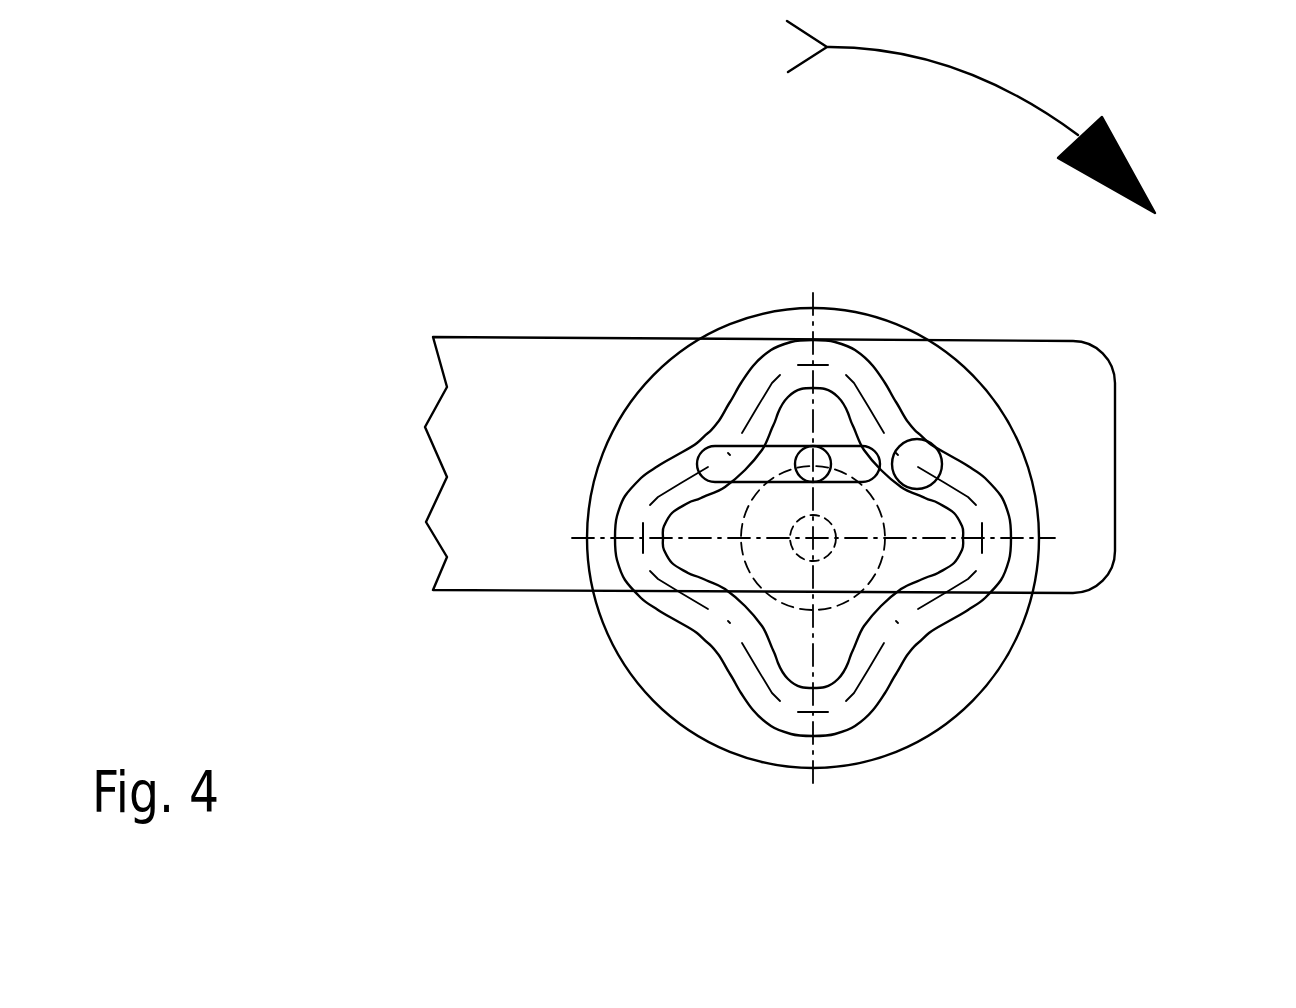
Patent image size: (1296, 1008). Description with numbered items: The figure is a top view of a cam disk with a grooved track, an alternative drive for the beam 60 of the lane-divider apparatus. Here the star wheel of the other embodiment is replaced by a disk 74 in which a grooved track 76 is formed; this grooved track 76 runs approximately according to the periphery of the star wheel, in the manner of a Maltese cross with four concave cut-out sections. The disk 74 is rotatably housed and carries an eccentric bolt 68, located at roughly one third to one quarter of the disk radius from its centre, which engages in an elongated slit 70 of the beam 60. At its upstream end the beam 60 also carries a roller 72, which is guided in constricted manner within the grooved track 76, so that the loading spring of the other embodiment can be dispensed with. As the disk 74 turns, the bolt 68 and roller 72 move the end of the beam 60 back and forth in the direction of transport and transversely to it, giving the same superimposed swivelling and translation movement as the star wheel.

The beam 60 is at (497, 525).
The eccentric bolt 68 is at (810, 462).
The slit 70 is at (757, 467).
The roller 72 is at (912, 462).
The disk 74 is at (939, 678).
The grooved track 76 is at (753, 673).